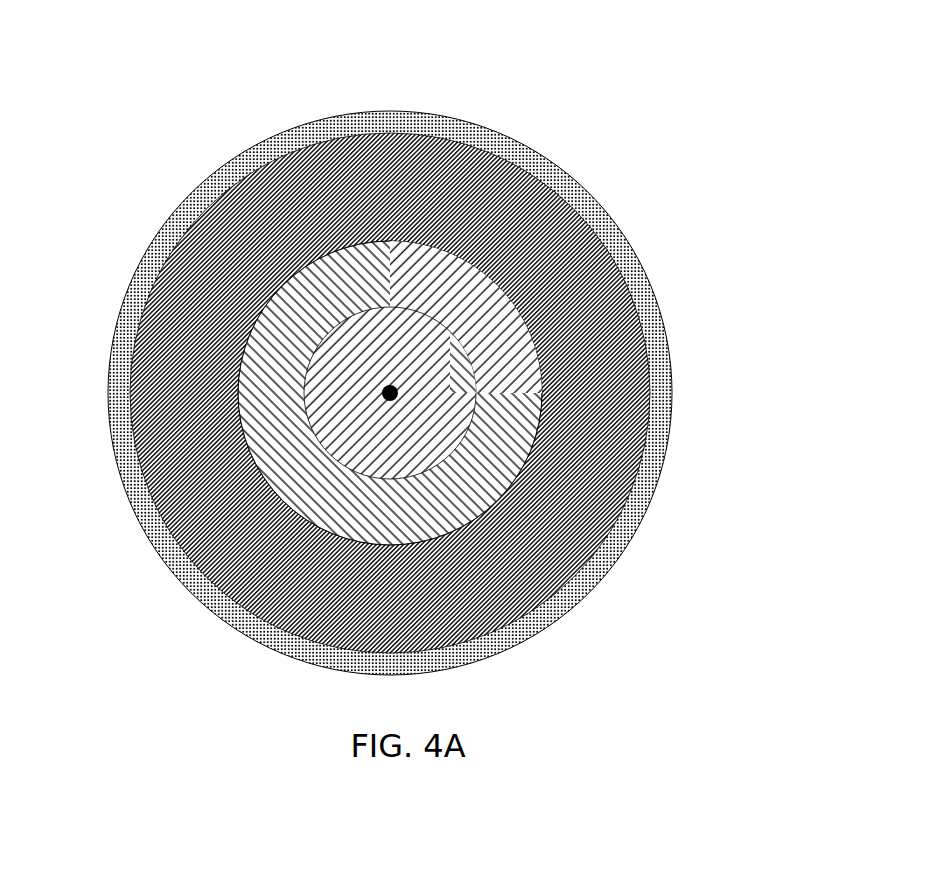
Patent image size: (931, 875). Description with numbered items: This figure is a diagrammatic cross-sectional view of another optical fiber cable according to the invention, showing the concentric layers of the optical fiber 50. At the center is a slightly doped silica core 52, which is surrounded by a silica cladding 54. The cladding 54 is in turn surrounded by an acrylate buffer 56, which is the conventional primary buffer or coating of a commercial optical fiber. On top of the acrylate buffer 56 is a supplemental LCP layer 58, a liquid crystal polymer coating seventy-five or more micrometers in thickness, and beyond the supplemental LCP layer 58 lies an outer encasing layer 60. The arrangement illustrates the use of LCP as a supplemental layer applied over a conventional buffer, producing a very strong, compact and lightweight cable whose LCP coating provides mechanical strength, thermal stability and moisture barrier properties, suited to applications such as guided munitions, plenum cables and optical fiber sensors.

The optical fiber 50 is at (642, 170).
The core 52 is at (398, 390).
The cladding 54 is at (460, 307).
The acrylate buffer 56 is at (373, 308).
The supplemental LCP layer 58 is at (265, 160).
The encasing layer 60 is at (163, 232).